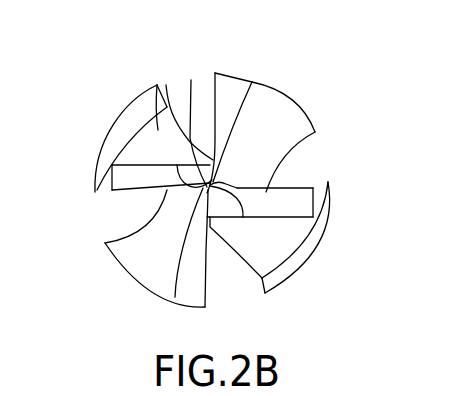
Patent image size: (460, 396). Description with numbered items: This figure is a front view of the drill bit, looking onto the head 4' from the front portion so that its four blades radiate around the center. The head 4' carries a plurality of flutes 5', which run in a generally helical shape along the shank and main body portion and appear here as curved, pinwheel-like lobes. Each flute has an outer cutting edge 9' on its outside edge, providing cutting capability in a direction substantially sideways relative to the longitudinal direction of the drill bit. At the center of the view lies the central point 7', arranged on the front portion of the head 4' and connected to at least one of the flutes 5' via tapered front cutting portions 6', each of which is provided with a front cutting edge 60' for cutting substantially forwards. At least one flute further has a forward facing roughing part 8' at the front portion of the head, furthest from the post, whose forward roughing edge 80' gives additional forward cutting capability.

The head 4' is at (187, 214).
The flutes 5' is at (182, 91).
The front cutting portions 6' is at (309, 211).
The central point 7' is at (196, 111).
The forward facing roughing part 8' is at (83, 167).
The outer cutting edge 9' is at (228, 158).
The front cutting edge 60' is at (314, 164).
The forward roughing edge 80' is at (116, 214).